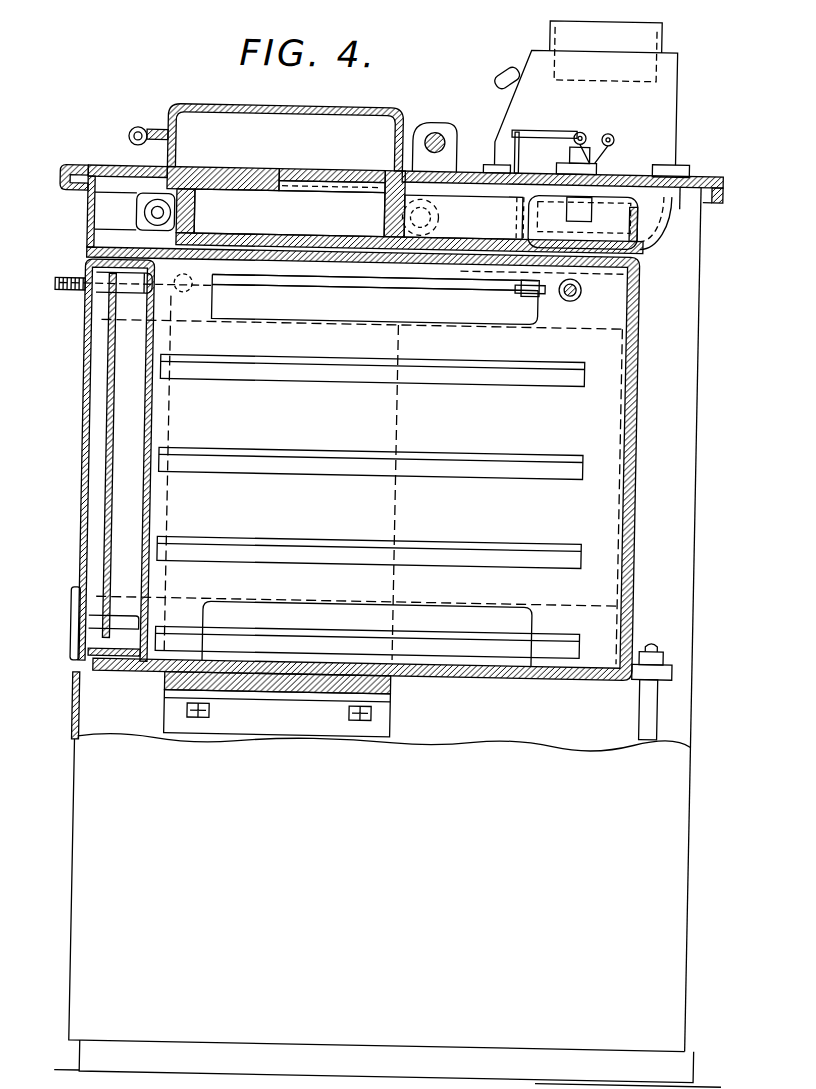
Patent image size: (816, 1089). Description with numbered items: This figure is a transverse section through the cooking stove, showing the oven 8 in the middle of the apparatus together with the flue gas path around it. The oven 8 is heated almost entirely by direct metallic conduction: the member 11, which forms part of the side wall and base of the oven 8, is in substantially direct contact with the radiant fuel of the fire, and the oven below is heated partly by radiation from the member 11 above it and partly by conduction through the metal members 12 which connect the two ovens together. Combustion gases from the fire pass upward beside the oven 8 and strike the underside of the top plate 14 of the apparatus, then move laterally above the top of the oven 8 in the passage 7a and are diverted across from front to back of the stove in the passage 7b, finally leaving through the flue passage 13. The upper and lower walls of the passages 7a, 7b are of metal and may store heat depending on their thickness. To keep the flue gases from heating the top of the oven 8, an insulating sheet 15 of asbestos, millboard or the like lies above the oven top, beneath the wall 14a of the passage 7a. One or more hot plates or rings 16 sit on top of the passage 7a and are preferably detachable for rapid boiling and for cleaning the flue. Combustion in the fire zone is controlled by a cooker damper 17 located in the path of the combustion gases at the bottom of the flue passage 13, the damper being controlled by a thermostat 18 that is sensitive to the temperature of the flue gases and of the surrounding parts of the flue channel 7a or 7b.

The passage 7a is at (289, 213).
The passage 7b is at (463, 219).
The oven 8 is at (392, 524).
The member 11 is at (395, 685).
The metal members 12 is at (654, 711).
The flue passage 13 is at (543, 30).
The top plate 14 is at (228, 170).
The wall of the passage 14a is at (287, 252).
The insulating sheet 15 is at (383, 250).
The hot plates or rings 16 is at (332, 174).
The cooker damper 17 is at (528, 190).
The thermostat 18 is at (582, 209).